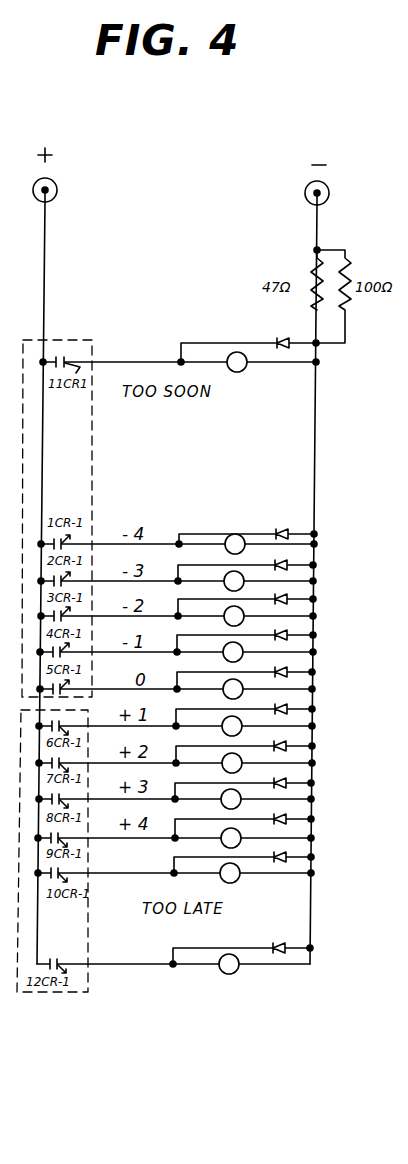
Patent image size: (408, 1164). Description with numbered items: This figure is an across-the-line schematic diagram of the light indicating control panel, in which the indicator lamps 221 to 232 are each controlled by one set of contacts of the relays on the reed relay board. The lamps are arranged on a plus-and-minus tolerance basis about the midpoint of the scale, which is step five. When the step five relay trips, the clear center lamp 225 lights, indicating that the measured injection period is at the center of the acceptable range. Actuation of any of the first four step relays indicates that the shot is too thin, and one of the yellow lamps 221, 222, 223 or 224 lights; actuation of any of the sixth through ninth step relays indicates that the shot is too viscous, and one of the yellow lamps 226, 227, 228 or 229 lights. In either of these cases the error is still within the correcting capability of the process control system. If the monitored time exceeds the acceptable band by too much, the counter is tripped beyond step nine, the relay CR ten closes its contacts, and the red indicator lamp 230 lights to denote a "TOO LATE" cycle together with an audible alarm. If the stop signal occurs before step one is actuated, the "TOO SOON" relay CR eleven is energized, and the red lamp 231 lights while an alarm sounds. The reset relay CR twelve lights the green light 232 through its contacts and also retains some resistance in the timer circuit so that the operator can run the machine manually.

The yellow indicator lamp 221 is at (227, 552).
The yellow indicator lamp 222 is at (230, 590).
The yellow indicator lamp 223 is at (230, 625).
The yellow indicator lamp 224 is at (228, 661).
The center lamp 225 is at (228, 698).
The yellow indicator lamp 226 is at (227, 735).
The yellow indicator lamp 227 is at (227, 772).
The yellow indicator lamp 228 is at (226, 808).
The yellow indicator lamp 229 is at (226, 847).
The red indicator lamp 230 is at (236, 883).
The red lamp 231 is at (268, 376).
The green light 232 is at (243, 977).